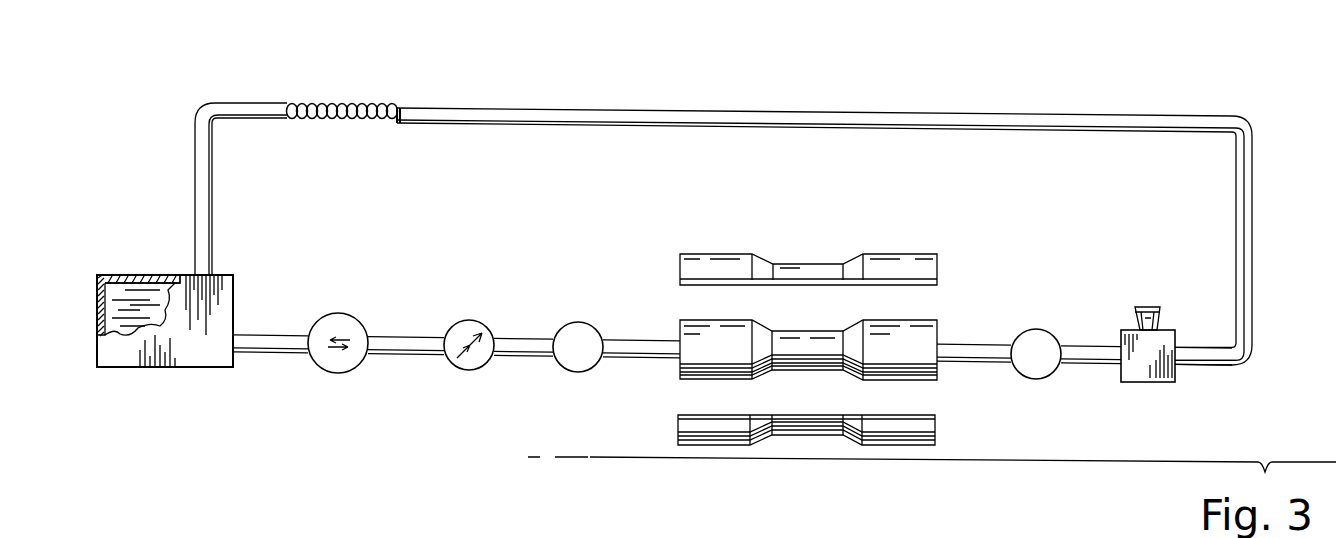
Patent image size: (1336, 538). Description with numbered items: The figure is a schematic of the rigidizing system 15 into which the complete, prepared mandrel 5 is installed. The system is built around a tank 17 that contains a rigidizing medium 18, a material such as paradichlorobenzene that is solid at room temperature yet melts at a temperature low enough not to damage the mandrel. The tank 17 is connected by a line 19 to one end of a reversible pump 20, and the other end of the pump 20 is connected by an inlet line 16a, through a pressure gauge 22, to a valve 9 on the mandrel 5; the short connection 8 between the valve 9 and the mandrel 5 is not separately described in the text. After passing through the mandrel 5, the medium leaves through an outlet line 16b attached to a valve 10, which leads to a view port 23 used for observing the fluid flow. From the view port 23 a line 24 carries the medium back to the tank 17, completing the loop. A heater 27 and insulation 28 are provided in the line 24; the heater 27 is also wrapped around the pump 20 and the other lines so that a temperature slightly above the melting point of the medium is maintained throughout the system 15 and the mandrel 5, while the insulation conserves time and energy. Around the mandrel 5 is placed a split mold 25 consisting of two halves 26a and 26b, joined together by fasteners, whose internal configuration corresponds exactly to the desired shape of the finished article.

The rigidizing system 15 is at (150, 146).
The heater 27 is at (350, 104).
The insulation 28 is at (438, 106).
The rigidizing medium 18 is at (135, 276).
The tank 17 is at (162, 368).
The line 19 is at (264, 356).
The reversible pump 20 is at (348, 374).
The pressure gauge 22 is at (470, 371).
The inlet line 16a is at (519, 357).
The valve 9 is at (592, 372).
The inlet pipe 8 is at (640, 358).
The split mold 25 is at (659, 234).
The mold half 26a is at (876, 254).
The mandrel 5 is at (678, 322).
The mold half 26b is at (936, 430).
The valve 10 is at (1024, 331).
The outlet line 16b is at (1082, 366).
The view port 23 is at (1160, 383).
The line 24 is at (1240, 366).